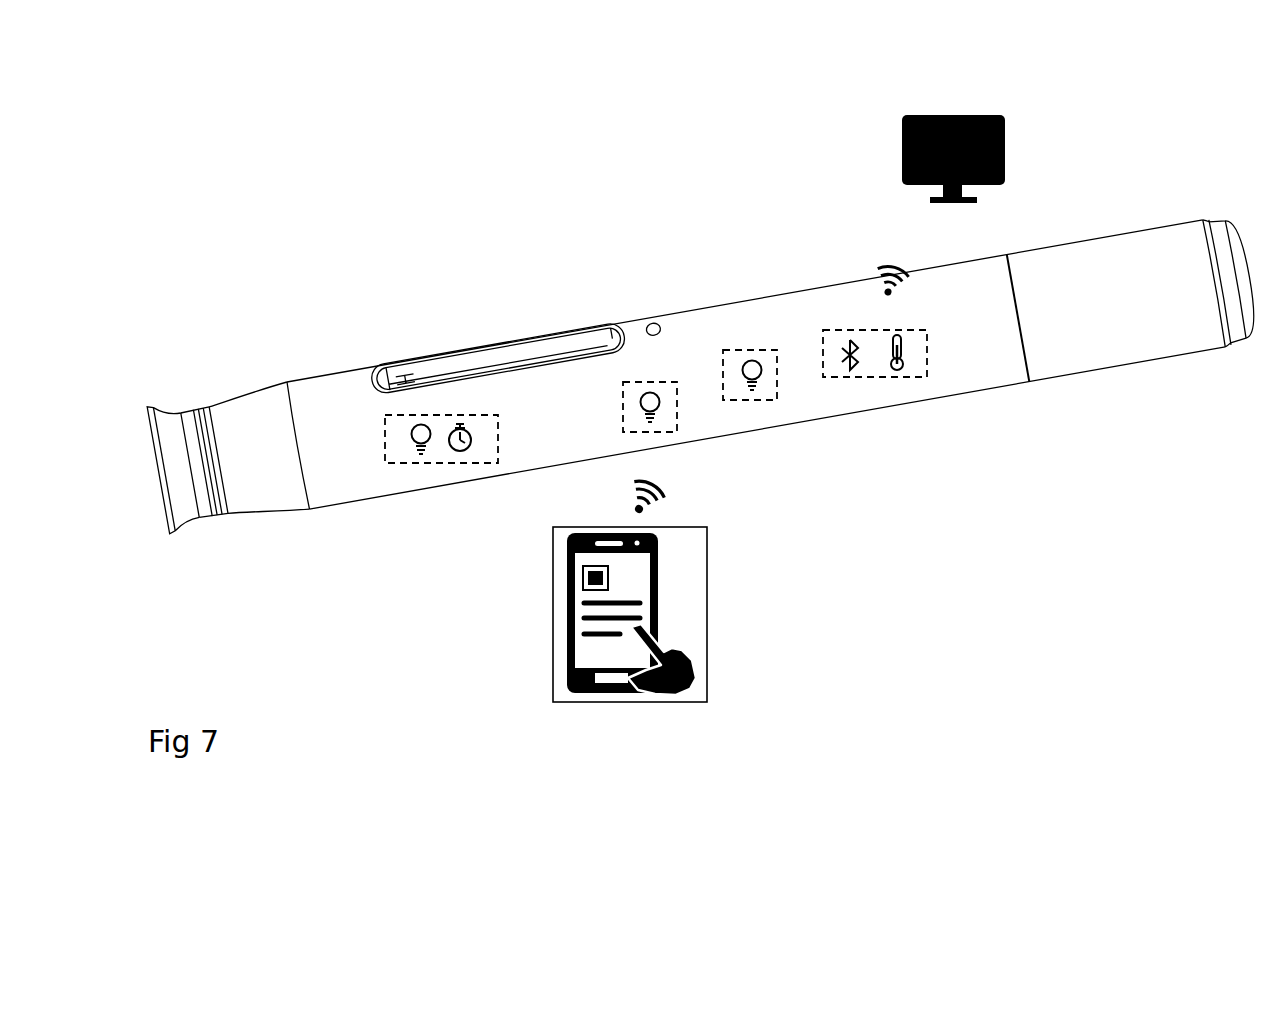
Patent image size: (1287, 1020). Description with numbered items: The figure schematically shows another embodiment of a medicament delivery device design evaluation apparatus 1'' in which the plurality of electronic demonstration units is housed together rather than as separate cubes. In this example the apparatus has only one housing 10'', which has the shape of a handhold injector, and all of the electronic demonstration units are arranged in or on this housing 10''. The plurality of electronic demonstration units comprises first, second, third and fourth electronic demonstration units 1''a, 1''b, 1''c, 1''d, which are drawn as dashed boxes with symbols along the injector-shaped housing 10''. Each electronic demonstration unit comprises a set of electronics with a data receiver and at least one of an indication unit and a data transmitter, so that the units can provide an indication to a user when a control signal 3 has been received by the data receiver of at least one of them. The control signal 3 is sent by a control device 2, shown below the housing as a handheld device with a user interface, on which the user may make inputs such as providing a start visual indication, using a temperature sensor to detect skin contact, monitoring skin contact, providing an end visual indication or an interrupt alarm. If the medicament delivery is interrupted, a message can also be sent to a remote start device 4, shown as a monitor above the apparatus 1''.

The medicament delivery device design evaluation apparatus 1'' is at (704, 352).
The housing 10'' is at (704, 373).
The first electronic demonstration unit 1''a is at (410, 398).
The second electronic demonstration unit 1''b is at (633, 358).
The third electronic demonstration unit 1''c is at (732, 330).
The fourth electronic demonstration unit 1''d is at (858, 307).
The control device 2 is at (707, 567).
The control signal 3 is at (635, 499).
The remote start device 4 is at (1005, 157).